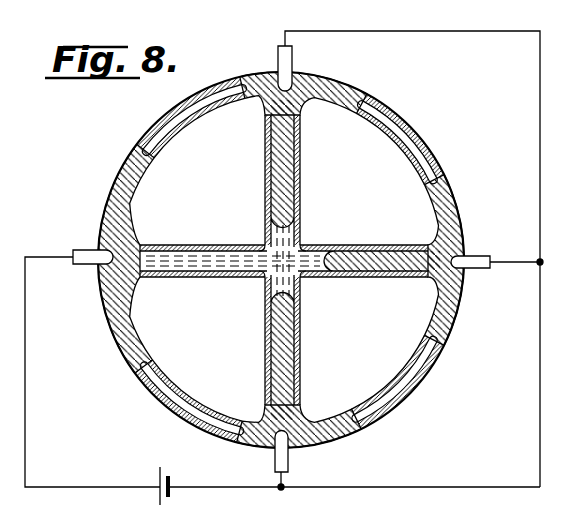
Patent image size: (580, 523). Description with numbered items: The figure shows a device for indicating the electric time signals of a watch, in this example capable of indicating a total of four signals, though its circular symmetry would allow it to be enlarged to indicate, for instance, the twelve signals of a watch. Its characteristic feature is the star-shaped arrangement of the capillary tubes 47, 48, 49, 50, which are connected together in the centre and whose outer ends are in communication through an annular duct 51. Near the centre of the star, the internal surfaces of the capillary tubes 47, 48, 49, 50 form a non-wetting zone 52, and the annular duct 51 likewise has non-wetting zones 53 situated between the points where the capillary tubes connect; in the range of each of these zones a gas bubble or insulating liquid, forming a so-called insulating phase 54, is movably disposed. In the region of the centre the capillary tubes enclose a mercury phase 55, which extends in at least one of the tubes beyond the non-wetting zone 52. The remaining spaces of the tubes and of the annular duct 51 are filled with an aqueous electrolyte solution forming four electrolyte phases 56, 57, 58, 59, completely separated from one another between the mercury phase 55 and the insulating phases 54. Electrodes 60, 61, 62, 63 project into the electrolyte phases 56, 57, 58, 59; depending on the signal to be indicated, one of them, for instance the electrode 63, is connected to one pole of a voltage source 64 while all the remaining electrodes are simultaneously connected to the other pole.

The capillary tube 47 is at (301, 162).
The capillary tube 48 is at (378, 278).
The capillary tube 49 is at (301, 350).
The capillary tube 50 is at (199, 278).
The annular duct 51 is at (442, 164).
The non-wetting zone 52 is at (265, 236).
The non-wetting zone 53 is at (149, 128).
The insulating phase 54 is at (212, 98).
The mercury phase 55 is at (301, 243).
The electrolyte phase 56 is at (324, 88).
The electrolyte phase 57 is at (453, 298).
The electrolyte phase 58 is at (338, 424).
The electrolyte phase 59 is at (126, 331).
The electrode 60 is at (280, 58).
The electrode 61 is at (487, 256).
The electrode 62 is at (289, 462).
The electrode 63 is at (77, 250).
The voltage source 64 is at (162, 469).